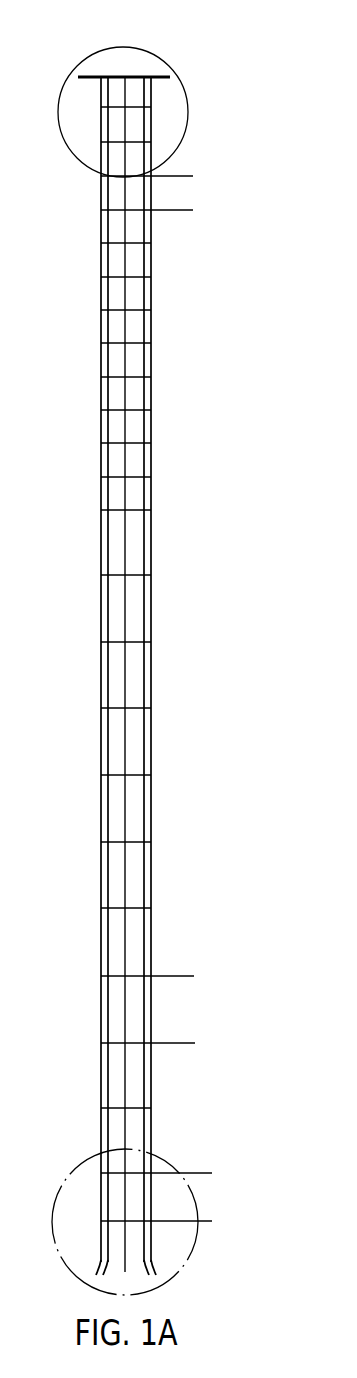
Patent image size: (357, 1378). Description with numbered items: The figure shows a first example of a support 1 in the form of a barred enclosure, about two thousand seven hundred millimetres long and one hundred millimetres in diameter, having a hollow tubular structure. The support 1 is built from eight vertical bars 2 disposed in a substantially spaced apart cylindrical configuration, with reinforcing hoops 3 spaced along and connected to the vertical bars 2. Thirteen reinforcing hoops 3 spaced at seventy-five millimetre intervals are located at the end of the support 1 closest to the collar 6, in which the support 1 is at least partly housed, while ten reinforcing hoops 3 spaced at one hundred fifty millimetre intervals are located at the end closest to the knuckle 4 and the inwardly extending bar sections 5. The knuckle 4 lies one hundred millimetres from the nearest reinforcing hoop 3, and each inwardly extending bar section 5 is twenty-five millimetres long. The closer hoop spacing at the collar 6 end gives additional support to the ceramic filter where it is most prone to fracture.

The support 1 is at (139, 662).
The vertical bars 2 is at (152, 500).
The reinforcing hoops 3 is at (132, 642).
The knuckle 4 is at (153, 1265).
The inwardly extending bar sections 5 is at (105, 1272).
The collar 6 is at (135, 76).